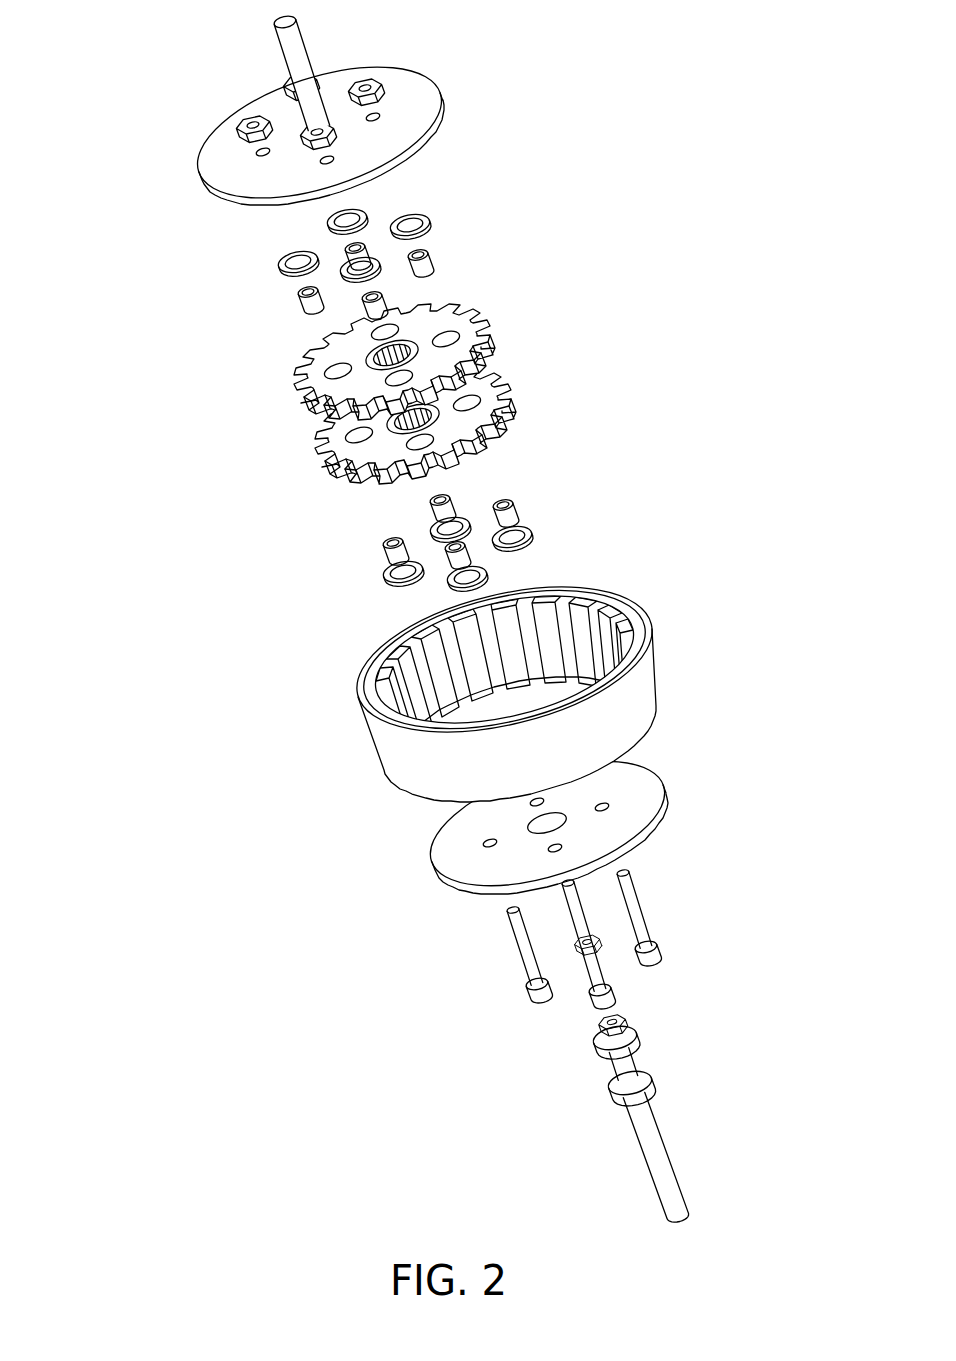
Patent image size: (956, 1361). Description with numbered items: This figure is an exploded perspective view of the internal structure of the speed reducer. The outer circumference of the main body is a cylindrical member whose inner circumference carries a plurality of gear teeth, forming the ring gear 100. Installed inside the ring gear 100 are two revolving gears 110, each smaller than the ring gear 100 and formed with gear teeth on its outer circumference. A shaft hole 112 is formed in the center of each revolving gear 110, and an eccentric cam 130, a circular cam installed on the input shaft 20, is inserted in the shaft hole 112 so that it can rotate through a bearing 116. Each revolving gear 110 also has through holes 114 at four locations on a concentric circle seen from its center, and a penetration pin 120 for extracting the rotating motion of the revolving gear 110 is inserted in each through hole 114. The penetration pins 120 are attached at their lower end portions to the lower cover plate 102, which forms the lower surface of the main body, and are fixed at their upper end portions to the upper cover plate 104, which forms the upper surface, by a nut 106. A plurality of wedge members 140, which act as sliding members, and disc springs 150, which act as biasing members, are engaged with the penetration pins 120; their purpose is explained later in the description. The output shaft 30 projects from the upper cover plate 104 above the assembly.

The input shaft 20 is at (670, 1155).
The output shaft 30 is at (274, 48).
The ring gear 100 is at (375, 737).
The lower cover plate 102 is at (663, 792).
The upper cover plate 104 is at (428, 76).
The nut 106 is at (312, 147).
The revolving gear 110 is at (406, 419).
The shaft hole 112 is at (298, 388).
The through holes 114 is at (362, 347).
The bearing 116 is at (432, 420).
The penetration pin 120 is at (592, 1007).
The eccentric cam 130 is at (652, 1080).
The wedge members 140 is at (425, 218).
The disc springs 150 is at (385, 295).